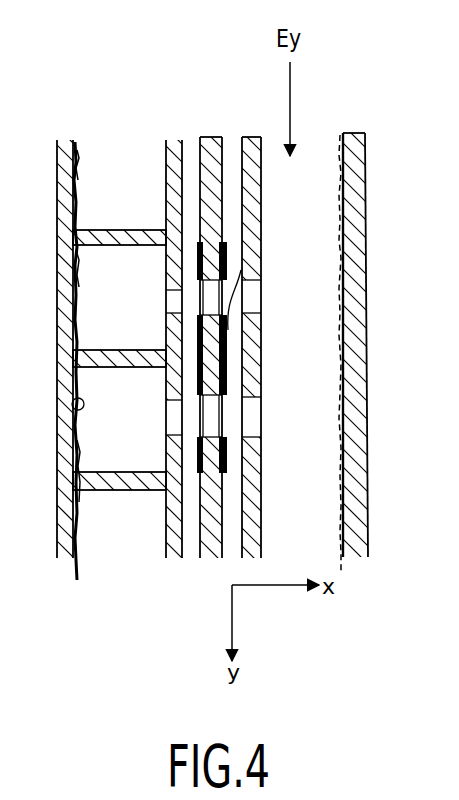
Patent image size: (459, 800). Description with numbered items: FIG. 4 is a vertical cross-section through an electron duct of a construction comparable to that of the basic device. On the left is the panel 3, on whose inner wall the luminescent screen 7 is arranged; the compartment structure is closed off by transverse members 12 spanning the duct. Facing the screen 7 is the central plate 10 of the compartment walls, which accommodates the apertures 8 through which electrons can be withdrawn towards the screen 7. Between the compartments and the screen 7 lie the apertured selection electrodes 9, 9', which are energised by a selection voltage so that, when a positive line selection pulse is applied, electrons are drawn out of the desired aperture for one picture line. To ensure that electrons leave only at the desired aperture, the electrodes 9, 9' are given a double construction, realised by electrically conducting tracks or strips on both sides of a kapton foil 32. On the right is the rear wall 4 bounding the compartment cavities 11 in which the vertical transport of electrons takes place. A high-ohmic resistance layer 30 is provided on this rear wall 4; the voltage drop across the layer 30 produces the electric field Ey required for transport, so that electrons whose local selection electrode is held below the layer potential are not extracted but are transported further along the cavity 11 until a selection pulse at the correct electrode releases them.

The panel 3 is at (62, 297).
The rear wall 4 is at (355, 192).
The luminescent screen 7 is at (72, 419).
The aperture 8 is at (255, 300).
The selection electrode 9 is at (247, 312).
The selection electrode 9' is at (250, 426).
The central plate 10 is at (248, 152).
The compartment cavity 11 is at (318, 262).
The crossbar 12 is at (113, 236).
The high-ohmic resistance layer 30 is at (338, 500).
The kapton foil 32 is at (212, 152).